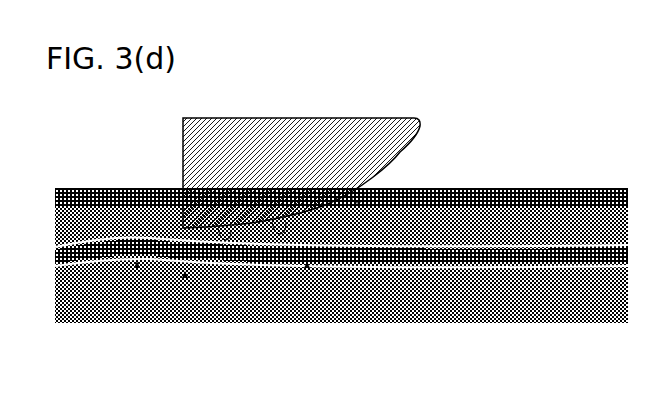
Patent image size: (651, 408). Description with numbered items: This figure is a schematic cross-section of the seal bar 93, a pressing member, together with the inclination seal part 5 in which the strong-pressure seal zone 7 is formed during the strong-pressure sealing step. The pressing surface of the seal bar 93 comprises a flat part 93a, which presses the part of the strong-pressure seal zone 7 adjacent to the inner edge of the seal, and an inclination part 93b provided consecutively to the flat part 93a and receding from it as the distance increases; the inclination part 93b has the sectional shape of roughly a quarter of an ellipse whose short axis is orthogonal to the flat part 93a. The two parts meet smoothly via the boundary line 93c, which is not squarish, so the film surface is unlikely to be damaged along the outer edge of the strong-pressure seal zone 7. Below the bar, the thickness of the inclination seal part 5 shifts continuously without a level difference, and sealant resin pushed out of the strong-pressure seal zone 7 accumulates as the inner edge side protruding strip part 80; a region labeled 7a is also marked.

The inclination seal part 5 is at (432, 298).
The strong-pressure seal zone 7 is at (293, 298).
The recessed portion 7a is at (183, 298).
The inner edge side protruding strip part 80 is at (128, 298).
The seal bar 93 is at (427, 127).
The flat part 93a is at (222, 236).
The inclination part 93b is at (352, 196).
The boundary line 93c is at (288, 230).